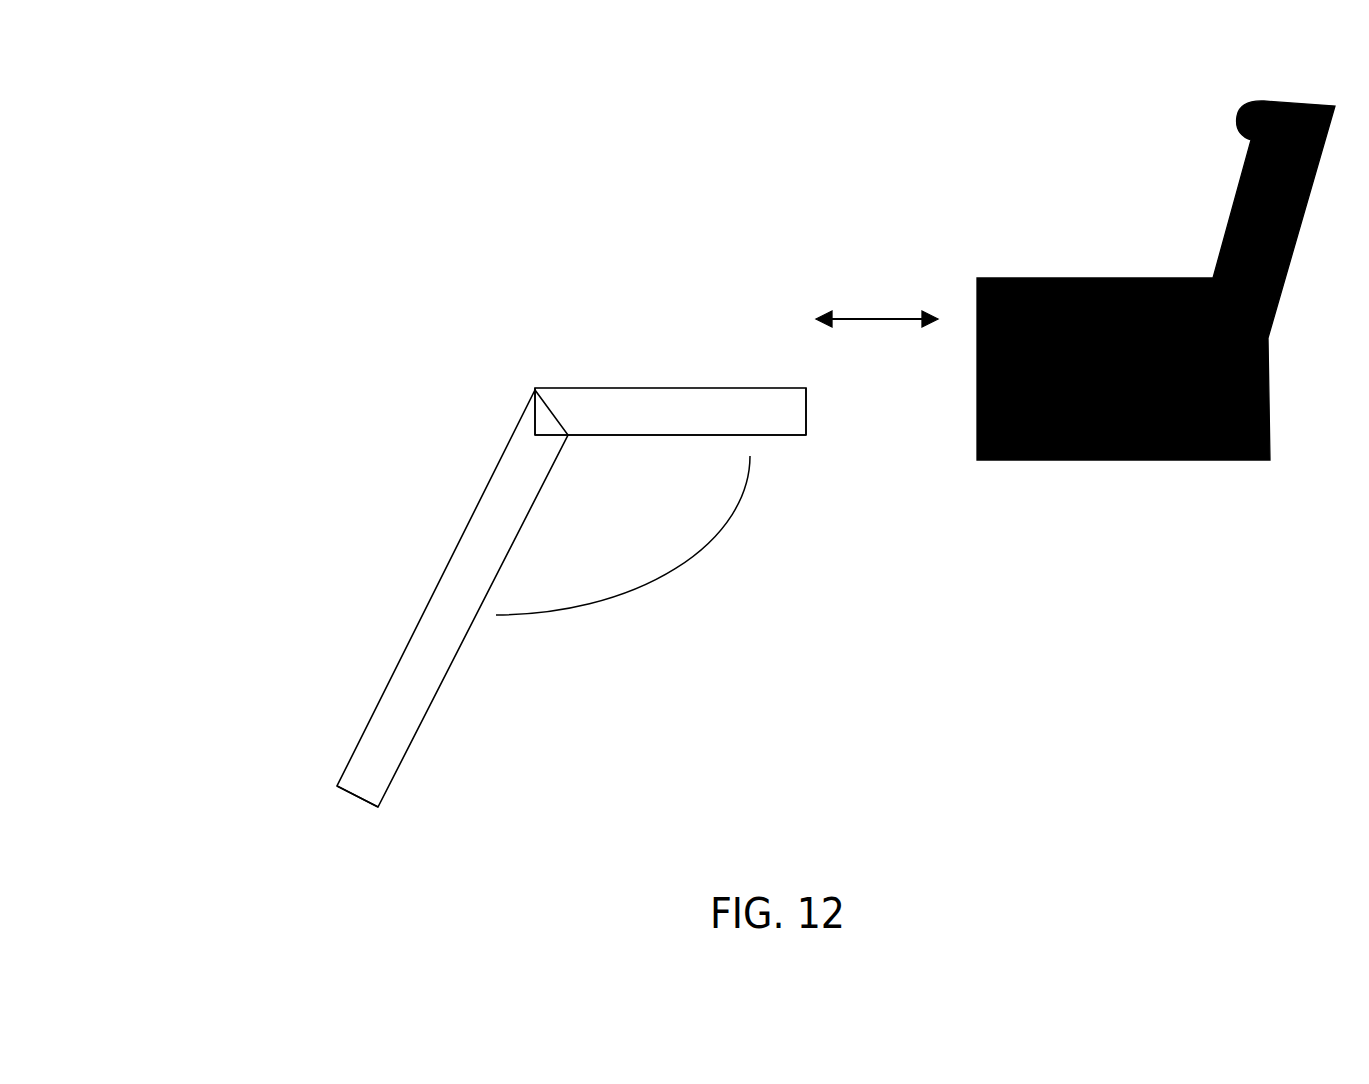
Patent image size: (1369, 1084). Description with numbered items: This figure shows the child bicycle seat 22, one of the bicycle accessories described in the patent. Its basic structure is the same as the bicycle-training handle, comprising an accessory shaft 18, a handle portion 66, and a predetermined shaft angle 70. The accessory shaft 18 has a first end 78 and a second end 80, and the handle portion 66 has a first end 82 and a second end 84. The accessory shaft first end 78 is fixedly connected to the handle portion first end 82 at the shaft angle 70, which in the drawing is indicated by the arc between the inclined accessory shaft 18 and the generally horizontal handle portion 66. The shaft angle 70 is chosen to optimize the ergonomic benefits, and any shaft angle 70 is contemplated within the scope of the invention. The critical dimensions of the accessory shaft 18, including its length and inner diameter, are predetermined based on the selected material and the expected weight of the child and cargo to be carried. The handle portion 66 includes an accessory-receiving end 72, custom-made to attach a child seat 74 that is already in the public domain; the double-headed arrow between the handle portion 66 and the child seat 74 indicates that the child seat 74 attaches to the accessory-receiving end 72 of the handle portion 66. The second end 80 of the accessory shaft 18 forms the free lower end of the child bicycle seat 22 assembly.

The child bicycle seat 22 is at (388, 257).
The accessory shaft 18 is at (382, 621).
The handle portion 66 is at (628, 372).
The first end 78 is at (517, 393).
The first end 82 is at (560, 415).
The accessory-receiving end 72 is at (763, 402).
The second end 84 is at (763, 425).
The shaft angle 70 is at (623, 542).
The second end 80 is at (350, 768).
The child seat 74 is at (1145, 227).